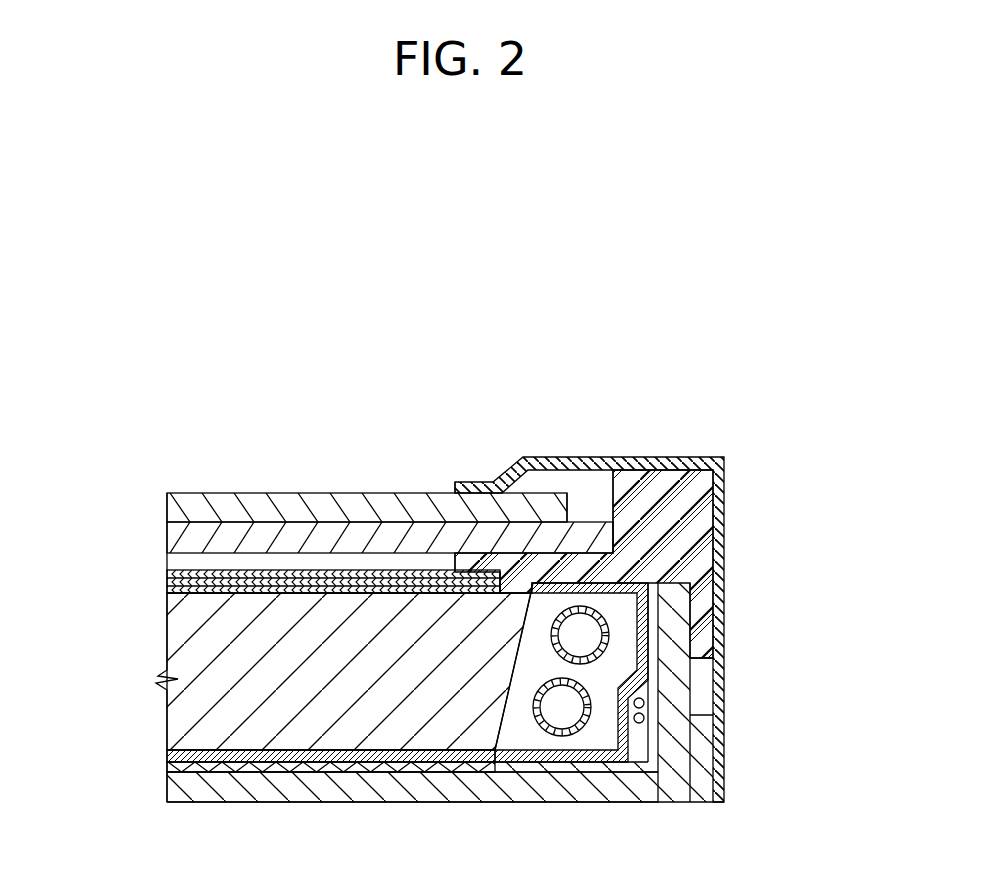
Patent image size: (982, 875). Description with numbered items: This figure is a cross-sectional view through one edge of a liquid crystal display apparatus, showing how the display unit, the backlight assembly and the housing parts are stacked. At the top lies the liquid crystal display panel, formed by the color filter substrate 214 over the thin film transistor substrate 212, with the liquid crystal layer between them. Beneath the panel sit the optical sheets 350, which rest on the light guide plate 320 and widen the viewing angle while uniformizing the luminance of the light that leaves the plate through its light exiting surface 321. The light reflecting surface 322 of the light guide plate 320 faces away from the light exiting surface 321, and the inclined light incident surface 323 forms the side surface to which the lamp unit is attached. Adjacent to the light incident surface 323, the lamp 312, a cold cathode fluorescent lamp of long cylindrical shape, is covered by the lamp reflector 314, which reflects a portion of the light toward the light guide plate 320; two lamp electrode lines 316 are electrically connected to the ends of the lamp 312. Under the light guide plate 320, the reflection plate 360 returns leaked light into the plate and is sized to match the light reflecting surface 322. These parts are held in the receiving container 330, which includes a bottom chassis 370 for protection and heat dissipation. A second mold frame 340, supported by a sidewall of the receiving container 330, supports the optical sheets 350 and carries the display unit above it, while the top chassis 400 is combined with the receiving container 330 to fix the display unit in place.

The color filter substrate 214 is at (182, 509).
The thin film transistor substrate 212 is at (182, 540).
The optical sheets 350 is at (157, 570).
The light guide plate 320 is at (182, 655).
The light exiting surface 321 is at (313, 596).
The light reflecting surface 322 is at (318, 749).
The light incident surface 323 is at (513, 677).
The reflection plate 360 is at (182, 753).
The bottom chassis 370 is at (182, 767).
The receiving container 330 is at (182, 787).
The top chassis 400 is at (725, 501).
The second mold frame 340 is at (706, 552).
The lamp electrode lines 316 is at (645, 718).
The lamp 312 is at (567, 737).
The lamp reflector 314 is at (612, 760).